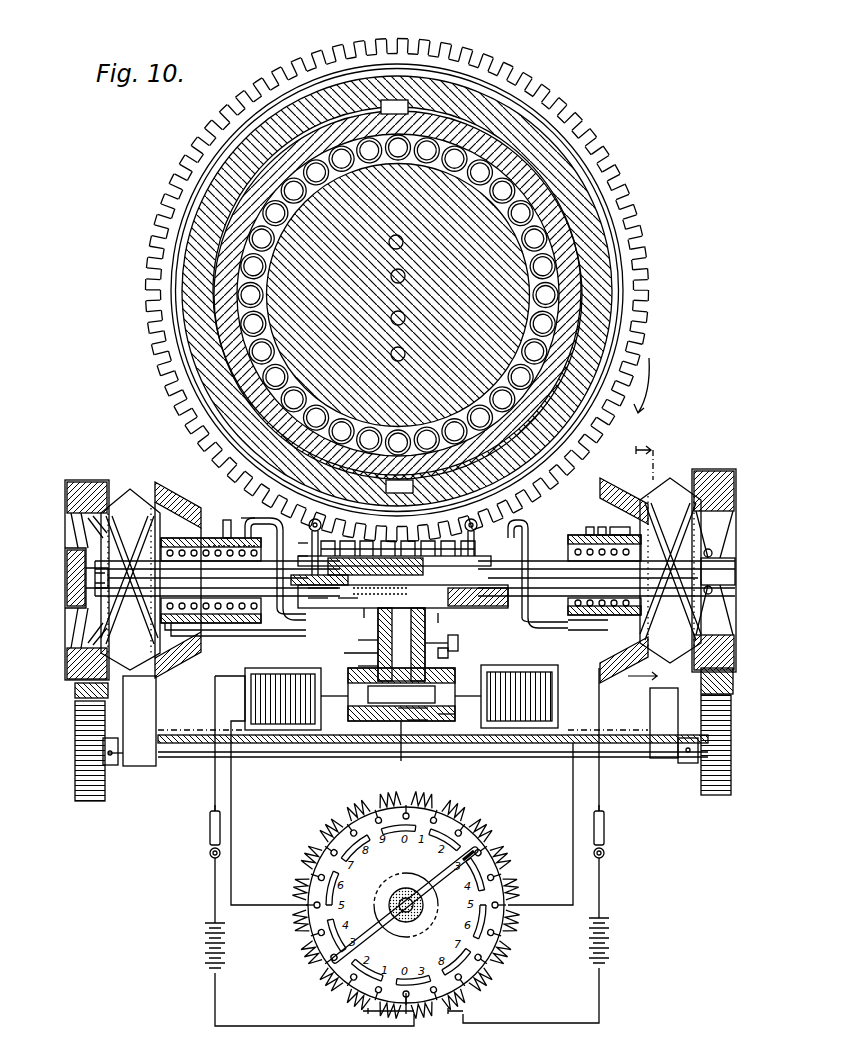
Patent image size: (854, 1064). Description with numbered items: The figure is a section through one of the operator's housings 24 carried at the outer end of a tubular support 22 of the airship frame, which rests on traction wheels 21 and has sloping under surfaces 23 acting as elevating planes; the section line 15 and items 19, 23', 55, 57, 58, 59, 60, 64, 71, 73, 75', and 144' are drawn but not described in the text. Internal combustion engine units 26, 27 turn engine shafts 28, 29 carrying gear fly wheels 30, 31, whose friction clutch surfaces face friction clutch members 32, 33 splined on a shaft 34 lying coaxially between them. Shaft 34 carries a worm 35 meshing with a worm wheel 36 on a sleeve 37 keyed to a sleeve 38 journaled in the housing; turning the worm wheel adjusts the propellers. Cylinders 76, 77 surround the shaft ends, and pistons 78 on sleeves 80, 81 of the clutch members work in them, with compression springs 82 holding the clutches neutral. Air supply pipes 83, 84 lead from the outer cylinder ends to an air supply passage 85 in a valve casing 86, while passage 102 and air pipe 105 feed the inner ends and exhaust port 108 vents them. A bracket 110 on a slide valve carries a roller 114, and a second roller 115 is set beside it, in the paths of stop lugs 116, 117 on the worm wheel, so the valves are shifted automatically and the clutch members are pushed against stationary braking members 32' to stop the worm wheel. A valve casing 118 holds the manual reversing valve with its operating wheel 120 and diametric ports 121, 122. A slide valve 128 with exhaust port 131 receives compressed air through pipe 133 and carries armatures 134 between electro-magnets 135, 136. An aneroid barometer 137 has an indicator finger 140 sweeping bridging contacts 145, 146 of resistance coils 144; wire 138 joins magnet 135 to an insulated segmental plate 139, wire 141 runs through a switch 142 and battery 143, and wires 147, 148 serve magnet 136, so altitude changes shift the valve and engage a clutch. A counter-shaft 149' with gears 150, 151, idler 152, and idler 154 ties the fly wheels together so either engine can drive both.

The section line indicator 15 is at (648, 452).
The bearing block 19 is at (447, 664).
The traction wheels 21 is at (316, 600).
The tubular supports 22 is at (440, 605).
The sloping under surfaces 23 is at (380, 545).
The magnet pole piece 23' is at (624, 575).
The operator's housing 24 is at (362, 619).
The internal combustion engine unit 26 is at (398, 535).
The internal combustion engine unit 27 is at (394, 545).
The engine shaft 28 is at (50, 580).
The engine shaft 29 is at (728, 563).
The gear fly wheel 30 is at (75, 473).
The gear fly wheel 31 is at (728, 472).
The friction clutch member 32 is at (130, 566).
The stationary braking friction member 32' is at (178, 578).
The friction clutch member 33 is at (662, 472).
The shaft 34 is at (704, 582).
The worm 35 is at (500, 150).
The worm wheel 36 is at (637, 299).
The sleeve 37 is at (585, 217).
The sleeve 38 is at (555, 236).
The housing 55 is at (400, 533).
The pin 57 is at (395, 234).
The pin 58 is at (397, 268).
The pin 59 is at (397, 310).
The pin 60 is at (397, 346).
The bearing housing 64 is at (585, 612).
The spacer 71 is at (598, 526).
The spring 73 is at (360, 639).
The bracket 75' is at (653, 715).
The cylinder 76 is at (216, 520).
The cylinder 77 is at (587, 522).
The piston 78 is at (203, 539).
The sleeve 80 is at (212, 568).
The sleeve 81 is at (625, 526).
The compression springs 82 is at (238, 519).
The air supply pipe 83 is at (200, 628).
The air supply pipe 84 is at (166, 530).
The air supply passage 85 is at (345, 600).
The valve casing 86 is at (492, 600).
The passage 102 is at (320, 595).
The air pipe 105 is at (560, 510).
The exhaust port 108 is at (304, 555).
The upstanding bracket 110 is at (304, 544).
The roller 114 is at (308, 510).
The roller 115 is at (463, 510).
The stop lug 116 is at (166, 380).
The stop lug 117 is at (492, 440).
The valve casing 118 is at (351, 653).
The operating wheel 120 is at (450, 635).
The diametric port 121 is at (361, 663).
The diametric port 122 is at (457, 655).
The slide valve 128 is at (459, 723).
The exhaust port 131 is at (429, 728).
The pipe 133 is at (393, 752).
The armatures 134 is at (439, 710).
The electro-magnet 135 is at (296, 691).
The electro-magnet 136 is at (500, 657).
The aneroid barometer 137 is at (406, 899).
The wire 138 is at (224, 793).
The insulated segmental plate 139 is at (381, 893).
The indicator finger 140 is at (438, 884).
The wire 141 is at (207, 895).
The switch 142 is at (202, 830).
The battery 143 is at (197, 940).
The resistance coils 144 is at (403, 905).
The bracket 144' is at (147, 732).
The bridging contacts 145 is at (486, 857).
The bridging contacts 146 is at (470, 845).
The wire 147 is at (565, 781).
The wire 148 is at (591, 777).
The counter-shaft 149' is at (680, 760).
The gear 150 is at (723, 778).
The gear 151 is at (82, 795).
The idler 152 is at (725, 672).
The idler 154 is at (67, 682).